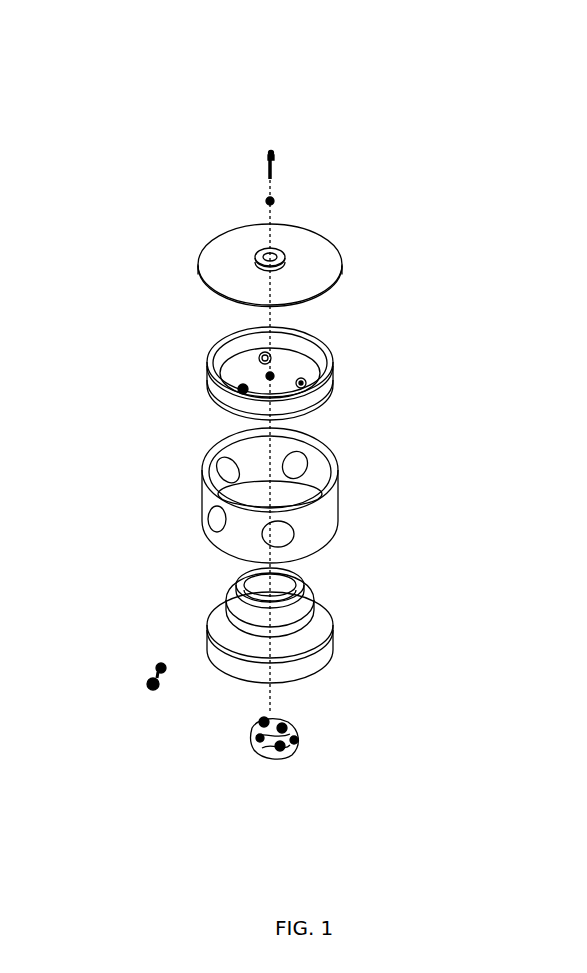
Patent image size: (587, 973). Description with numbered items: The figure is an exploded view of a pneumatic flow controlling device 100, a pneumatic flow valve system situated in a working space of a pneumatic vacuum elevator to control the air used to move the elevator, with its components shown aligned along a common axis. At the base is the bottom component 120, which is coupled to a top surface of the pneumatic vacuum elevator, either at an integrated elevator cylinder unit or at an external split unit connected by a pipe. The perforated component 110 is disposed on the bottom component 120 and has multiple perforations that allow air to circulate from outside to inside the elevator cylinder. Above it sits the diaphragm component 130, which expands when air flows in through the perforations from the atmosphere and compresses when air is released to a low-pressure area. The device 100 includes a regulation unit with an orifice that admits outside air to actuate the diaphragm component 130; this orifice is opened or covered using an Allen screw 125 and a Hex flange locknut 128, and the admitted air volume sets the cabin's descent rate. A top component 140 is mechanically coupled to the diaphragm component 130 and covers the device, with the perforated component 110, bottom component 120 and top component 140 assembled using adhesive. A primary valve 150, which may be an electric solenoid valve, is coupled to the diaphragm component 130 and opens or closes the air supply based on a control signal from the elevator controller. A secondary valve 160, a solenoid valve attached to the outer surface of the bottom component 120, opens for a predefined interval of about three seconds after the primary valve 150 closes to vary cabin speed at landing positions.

The pneumatic flow controlling device 100 is at (254, 70).
The perforated component 110 is at (323, 522).
The bottom component 120 is at (327, 653).
The Allen screw 125 is at (272, 165).
The Hex flange locknut 128 is at (272, 203).
The diaphragm component 130 is at (337, 375).
The top component 140 is at (322, 277).
The primary valve 150 is at (297, 733).
The secondary valve 160 is at (147, 682).